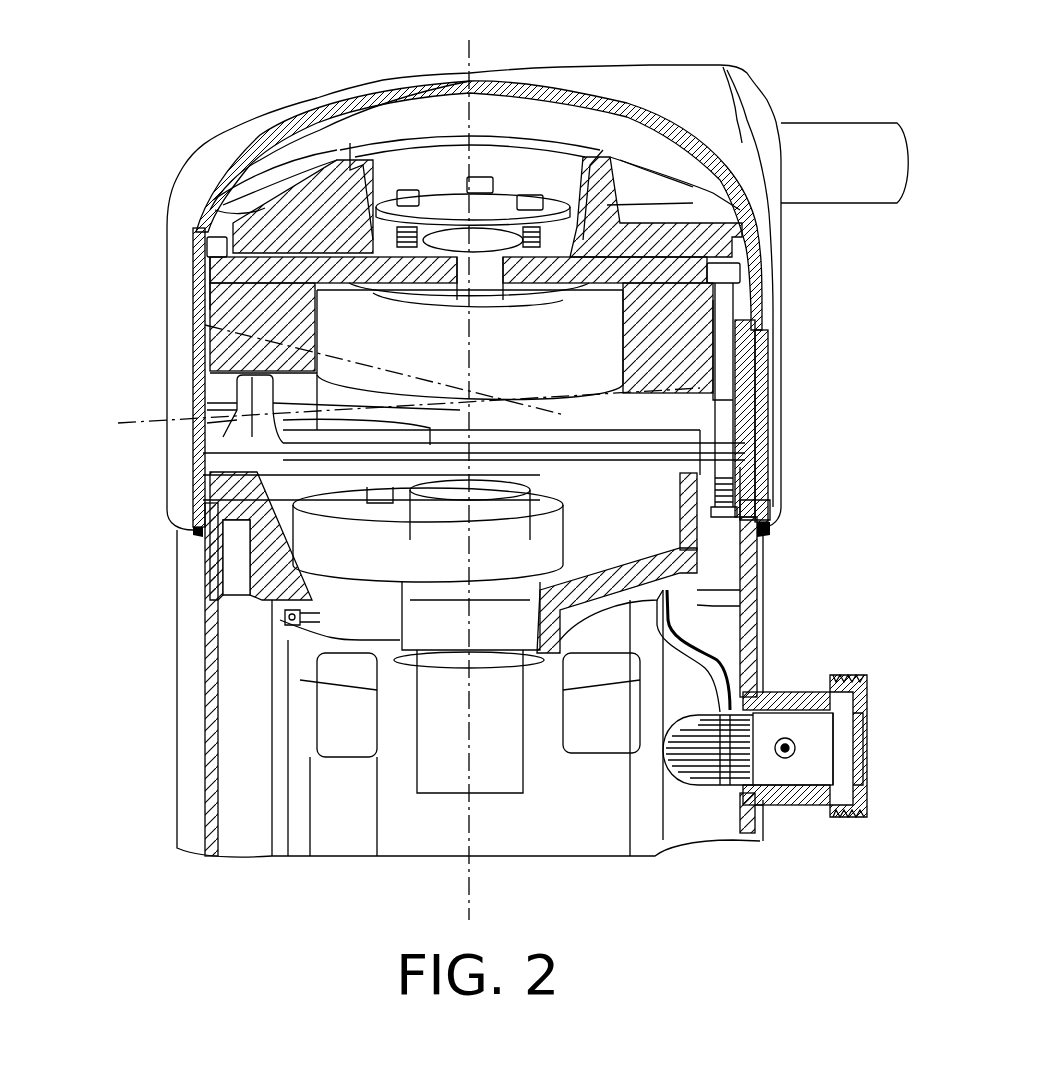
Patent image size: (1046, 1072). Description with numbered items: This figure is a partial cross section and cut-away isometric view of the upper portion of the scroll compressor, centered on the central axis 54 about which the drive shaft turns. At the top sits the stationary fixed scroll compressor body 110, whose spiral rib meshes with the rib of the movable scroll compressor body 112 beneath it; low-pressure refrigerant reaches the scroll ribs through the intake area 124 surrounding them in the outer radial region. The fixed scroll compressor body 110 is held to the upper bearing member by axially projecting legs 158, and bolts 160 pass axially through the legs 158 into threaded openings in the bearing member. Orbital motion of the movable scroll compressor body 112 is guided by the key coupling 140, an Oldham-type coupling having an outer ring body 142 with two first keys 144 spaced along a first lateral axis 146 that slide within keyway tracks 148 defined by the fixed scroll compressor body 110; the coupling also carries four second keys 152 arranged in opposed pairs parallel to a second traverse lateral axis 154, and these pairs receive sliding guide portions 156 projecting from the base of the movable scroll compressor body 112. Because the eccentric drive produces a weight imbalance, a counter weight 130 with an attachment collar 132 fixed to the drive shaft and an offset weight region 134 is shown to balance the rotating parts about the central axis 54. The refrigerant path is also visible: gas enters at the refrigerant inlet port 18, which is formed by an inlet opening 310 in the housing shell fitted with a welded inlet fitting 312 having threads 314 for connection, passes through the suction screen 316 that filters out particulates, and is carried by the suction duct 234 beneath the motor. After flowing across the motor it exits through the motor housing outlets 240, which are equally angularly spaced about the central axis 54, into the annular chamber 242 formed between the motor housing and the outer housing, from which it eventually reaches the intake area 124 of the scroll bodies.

The central axis 54 is at (472, 58).
The fixed scroll compressor body 110 is at (220, 200).
The intake area 124 is at (310, 300).
The movable scroll compressor body 112 is at (310, 365).
The keyway tracks 148 is at (213, 387).
The first keys 144 is at (268, 395).
The key coupling 140 is at (290, 465).
The outer ring body 142 is at (260, 492).
The offset weight region 134 is at (330, 533).
The second keys 152 is at (300, 590).
The annular chamber 242 is at (240, 680).
The bolts 160 is at (730, 307).
The first lateral axis 146 is at (797, 363).
The axially projecting legs 158 is at (743, 390).
The second traverse lateral axis 154 is at (717, 400).
The sliding guide portions 156 is at (740, 467).
The attachment collar 132 is at (760, 507).
The counter weight 130 is at (747, 573).
The motor housing outlets 240 is at (713, 608).
The suction duct 234 is at (717, 637).
The inlet fitting 312 is at (865, 680).
The refrigerant inlet port 18 is at (823, 742).
The threads 314 is at (850, 817).
The inlet opening 310 is at (750, 810).
The suction screen 316 is at (710, 787).